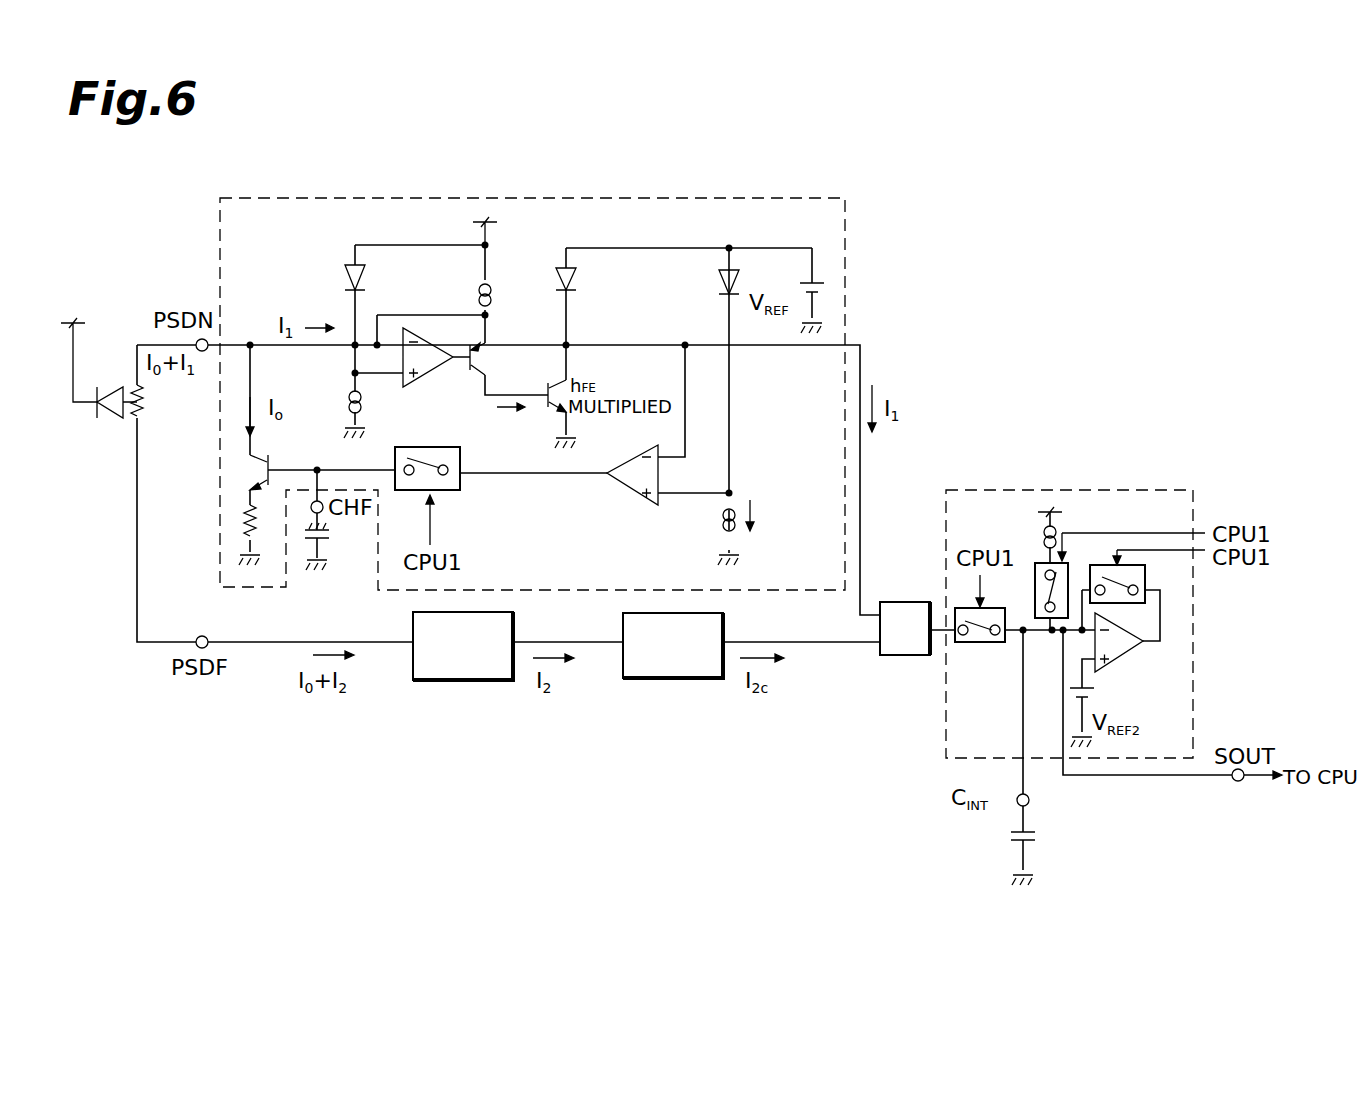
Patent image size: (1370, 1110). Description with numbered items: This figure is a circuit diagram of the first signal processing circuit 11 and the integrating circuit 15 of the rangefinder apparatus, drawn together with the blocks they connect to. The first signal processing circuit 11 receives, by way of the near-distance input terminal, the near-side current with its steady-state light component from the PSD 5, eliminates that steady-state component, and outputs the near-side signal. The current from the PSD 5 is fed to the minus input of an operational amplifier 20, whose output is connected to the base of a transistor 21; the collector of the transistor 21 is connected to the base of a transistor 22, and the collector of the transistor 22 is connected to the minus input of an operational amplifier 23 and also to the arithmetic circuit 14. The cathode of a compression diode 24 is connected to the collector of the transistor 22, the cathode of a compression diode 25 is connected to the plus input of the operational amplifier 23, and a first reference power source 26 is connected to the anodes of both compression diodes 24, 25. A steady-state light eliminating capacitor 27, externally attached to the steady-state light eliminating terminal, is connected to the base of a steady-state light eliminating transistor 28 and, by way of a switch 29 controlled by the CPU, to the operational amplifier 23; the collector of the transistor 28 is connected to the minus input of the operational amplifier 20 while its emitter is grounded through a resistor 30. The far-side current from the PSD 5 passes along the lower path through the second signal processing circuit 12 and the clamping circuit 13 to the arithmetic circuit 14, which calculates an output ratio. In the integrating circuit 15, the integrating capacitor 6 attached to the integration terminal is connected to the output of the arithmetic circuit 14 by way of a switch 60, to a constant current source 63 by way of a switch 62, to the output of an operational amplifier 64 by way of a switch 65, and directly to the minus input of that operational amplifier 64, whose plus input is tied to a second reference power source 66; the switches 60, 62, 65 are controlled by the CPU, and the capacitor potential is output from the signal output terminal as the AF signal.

The PSD 5 is at (115, 387).
The integrating capacitor 6 is at (1038, 836).
The first signal processing circuit 11 is at (445, 198).
The second signal processing circuit 12 is at (455, 683).
The clamping circuit 13 is at (672, 680).
The arithmetic circuit 14 is at (908, 600).
The integrating circuit 15 is at (1122, 490).
The operational amplifier 20 is at (428, 393).
The transistor 21 is at (476, 372).
The transistor 22 is at (545, 410).
The operational amplifier 23 is at (632, 492).
The compression diode 24 is at (556, 278).
The compression diode 25 is at (718, 288).
The first reference power source 26 is at (814, 277).
The steady-state light eliminating capacitor 27 is at (332, 540).
The steady-state light eliminating transistor 28 is at (270, 460).
The switch 29 is at (462, 490).
The resistor 30 is at (240, 532).
The switch 60 is at (986, 645).
The switch 62 is at (1040, 562).
The constant current source 63 is at (1060, 530).
The operational amplifier 64 is at (1132, 660).
The switch 65 is at (1147, 586).
The second reference power source 66 is at (1095, 690).